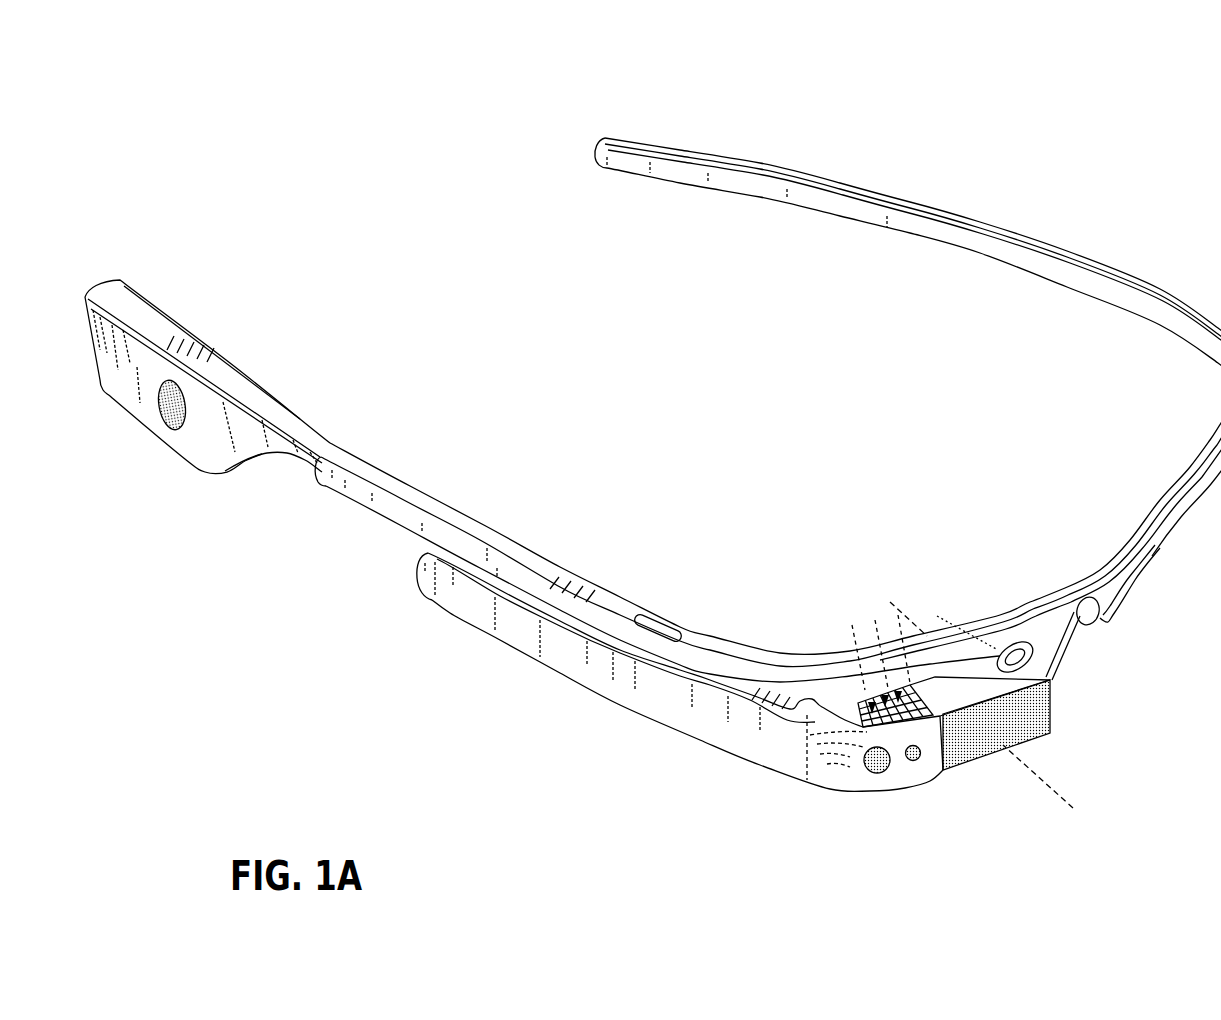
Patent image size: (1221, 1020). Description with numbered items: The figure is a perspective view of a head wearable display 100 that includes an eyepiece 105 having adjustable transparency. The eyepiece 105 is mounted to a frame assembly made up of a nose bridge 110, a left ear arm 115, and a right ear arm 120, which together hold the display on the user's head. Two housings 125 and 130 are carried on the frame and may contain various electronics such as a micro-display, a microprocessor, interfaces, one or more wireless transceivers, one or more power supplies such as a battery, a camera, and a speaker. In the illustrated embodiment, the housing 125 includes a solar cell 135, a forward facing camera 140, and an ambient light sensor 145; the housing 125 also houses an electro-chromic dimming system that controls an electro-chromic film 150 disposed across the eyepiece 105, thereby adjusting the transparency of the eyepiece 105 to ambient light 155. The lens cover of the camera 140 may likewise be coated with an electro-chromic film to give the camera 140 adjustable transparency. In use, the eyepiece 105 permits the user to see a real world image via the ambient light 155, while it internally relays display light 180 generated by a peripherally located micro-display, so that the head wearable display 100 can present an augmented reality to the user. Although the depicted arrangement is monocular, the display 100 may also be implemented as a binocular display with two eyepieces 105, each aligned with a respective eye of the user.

The head wearable display 100 is at (1121, 73).
The eyepiece 105 is at (1085, 782).
The nose bridge 110 is at (1135, 660).
The left ear arm 115 is at (934, 213).
The right ear arm 120 is at (498, 534).
The housing 125 is at (713, 733).
The housing 130 is at (218, 456).
The solar cell 135 is at (858, 705).
The forward facing camera 140 is at (868, 768).
The ambient light sensor 145 is at (910, 766).
The electro-chromic film 150 is at (1040, 717).
The ambient light 155 is at (890, 600).
The display light 180 is at (936, 613).